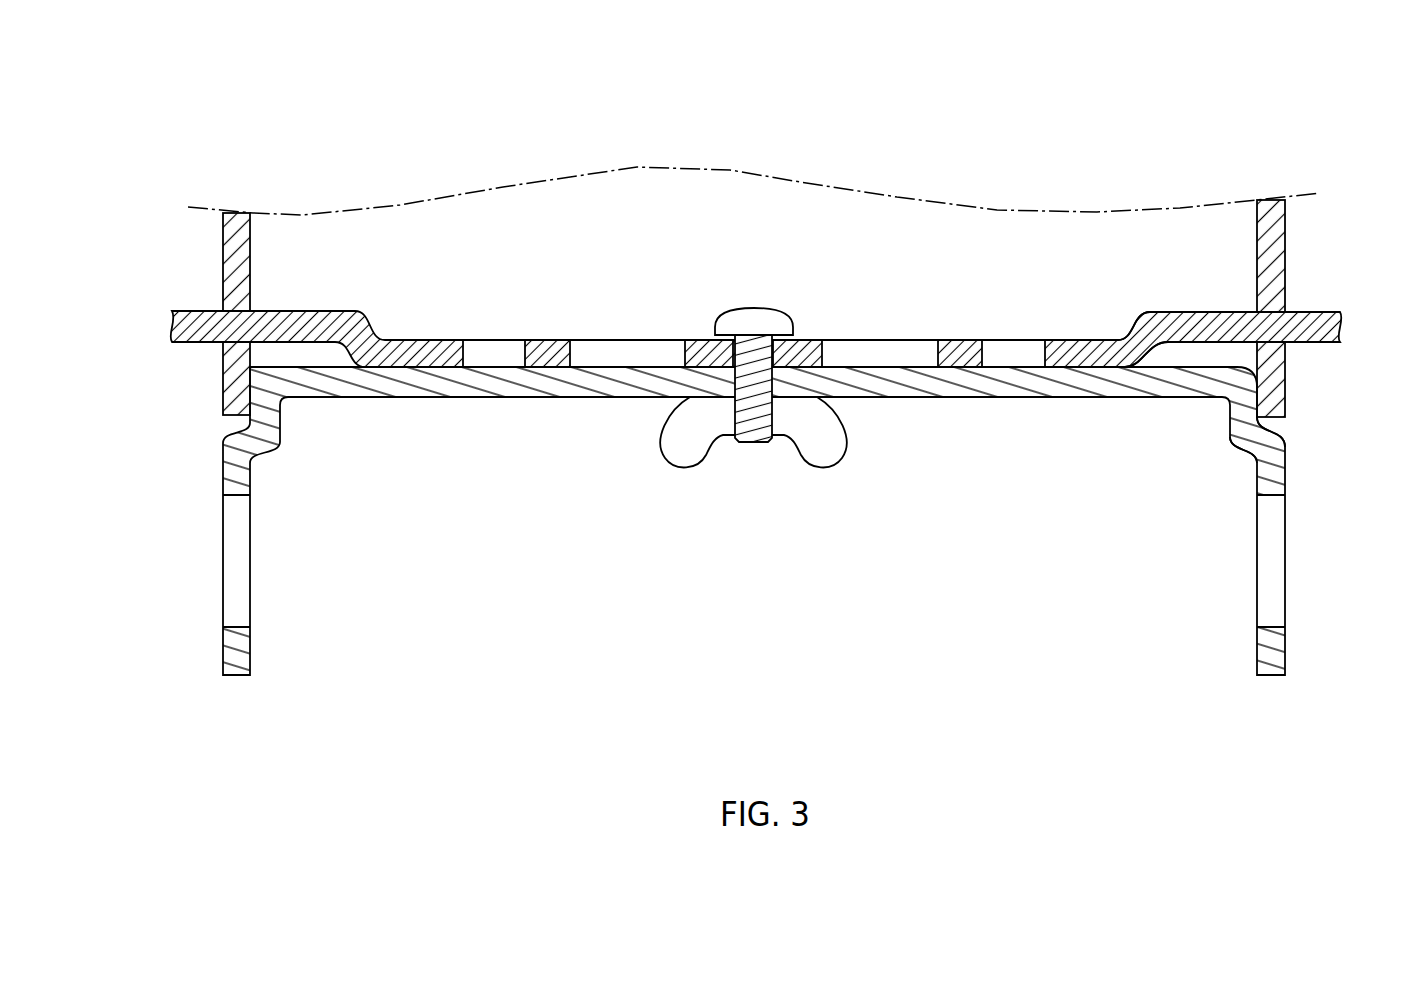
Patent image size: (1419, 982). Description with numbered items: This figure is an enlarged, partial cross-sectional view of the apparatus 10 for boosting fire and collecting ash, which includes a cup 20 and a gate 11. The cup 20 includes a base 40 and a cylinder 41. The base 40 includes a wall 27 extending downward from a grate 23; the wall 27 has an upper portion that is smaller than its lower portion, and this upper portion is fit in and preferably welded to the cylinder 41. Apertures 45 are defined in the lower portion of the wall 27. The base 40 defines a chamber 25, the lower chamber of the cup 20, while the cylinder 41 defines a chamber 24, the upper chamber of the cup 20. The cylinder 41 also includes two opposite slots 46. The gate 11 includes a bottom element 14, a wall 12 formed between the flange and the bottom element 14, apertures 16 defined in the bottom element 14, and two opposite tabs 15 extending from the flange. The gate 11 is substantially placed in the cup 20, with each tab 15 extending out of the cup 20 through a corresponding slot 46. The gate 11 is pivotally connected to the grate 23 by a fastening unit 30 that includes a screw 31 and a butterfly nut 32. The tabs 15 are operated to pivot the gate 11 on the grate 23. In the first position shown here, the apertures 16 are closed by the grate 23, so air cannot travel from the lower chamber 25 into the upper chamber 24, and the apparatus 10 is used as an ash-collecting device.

The apparatus 10 is at (751, 230).
The gate 11 is at (1130, 331).
The wall 12 is at (756, 233).
The bottom element 14 is at (710, 343).
The tabs 15 is at (200, 308).
The apertures 16 is at (505, 343).
The cup 20 is at (742, 521).
The grate 23 is at (597, 387).
The chamber 24 is at (642, 203).
The chamber 25 is at (452, 488).
The wall 27 is at (1270, 470).
The fastening unit 30 is at (782, 257).
The screw 31 is at (758, 320).
The butterfly nut 32 is at (818, 442).
The base 40 is at (237, 475).
The cylinder 41 is at (233, 372).
The apertures 45 is at (1268, 568).
The slots 46 is at (1282, 307).